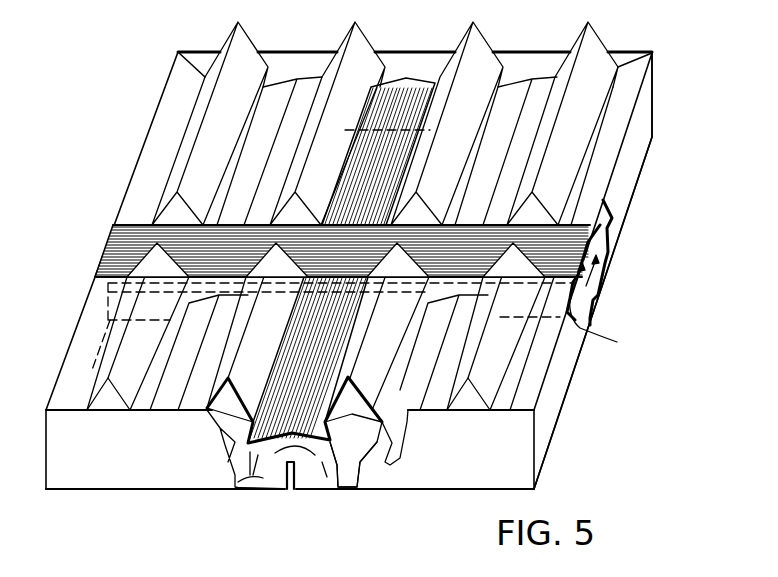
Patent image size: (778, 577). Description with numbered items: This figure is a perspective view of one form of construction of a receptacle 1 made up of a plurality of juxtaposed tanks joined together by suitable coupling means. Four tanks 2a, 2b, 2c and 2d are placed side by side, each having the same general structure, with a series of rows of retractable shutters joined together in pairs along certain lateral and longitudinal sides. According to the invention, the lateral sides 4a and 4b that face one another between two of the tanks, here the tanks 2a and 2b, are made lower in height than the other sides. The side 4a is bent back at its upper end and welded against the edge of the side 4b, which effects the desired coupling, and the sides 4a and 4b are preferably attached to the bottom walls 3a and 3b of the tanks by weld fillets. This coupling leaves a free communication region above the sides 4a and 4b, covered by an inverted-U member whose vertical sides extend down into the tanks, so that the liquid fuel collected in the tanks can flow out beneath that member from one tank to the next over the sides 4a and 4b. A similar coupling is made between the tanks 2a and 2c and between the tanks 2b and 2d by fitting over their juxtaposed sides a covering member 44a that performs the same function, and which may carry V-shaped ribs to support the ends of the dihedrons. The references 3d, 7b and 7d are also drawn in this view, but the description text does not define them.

The block body 1 is at (575, 393).
The tank 2a is at (98, 489).
The tank 2b is at (449, 489).
The tank 2c is at (292, 53).
The tank 2d is at (655, 78).
The bottom wall 3a is at (262, 480).
The bottom wall 3b is at (318, 480).
The side outlet opening of transverse channel 3d is at (609, 263).
The lateral side 4a is at (275, 490).
The lateral side 4b is at (302, 495).
The flow passage 7b is at (590, 325).
The flow arrows in side outlet 7d is at (607, 282).
The covering member 44a is at (108, 243).